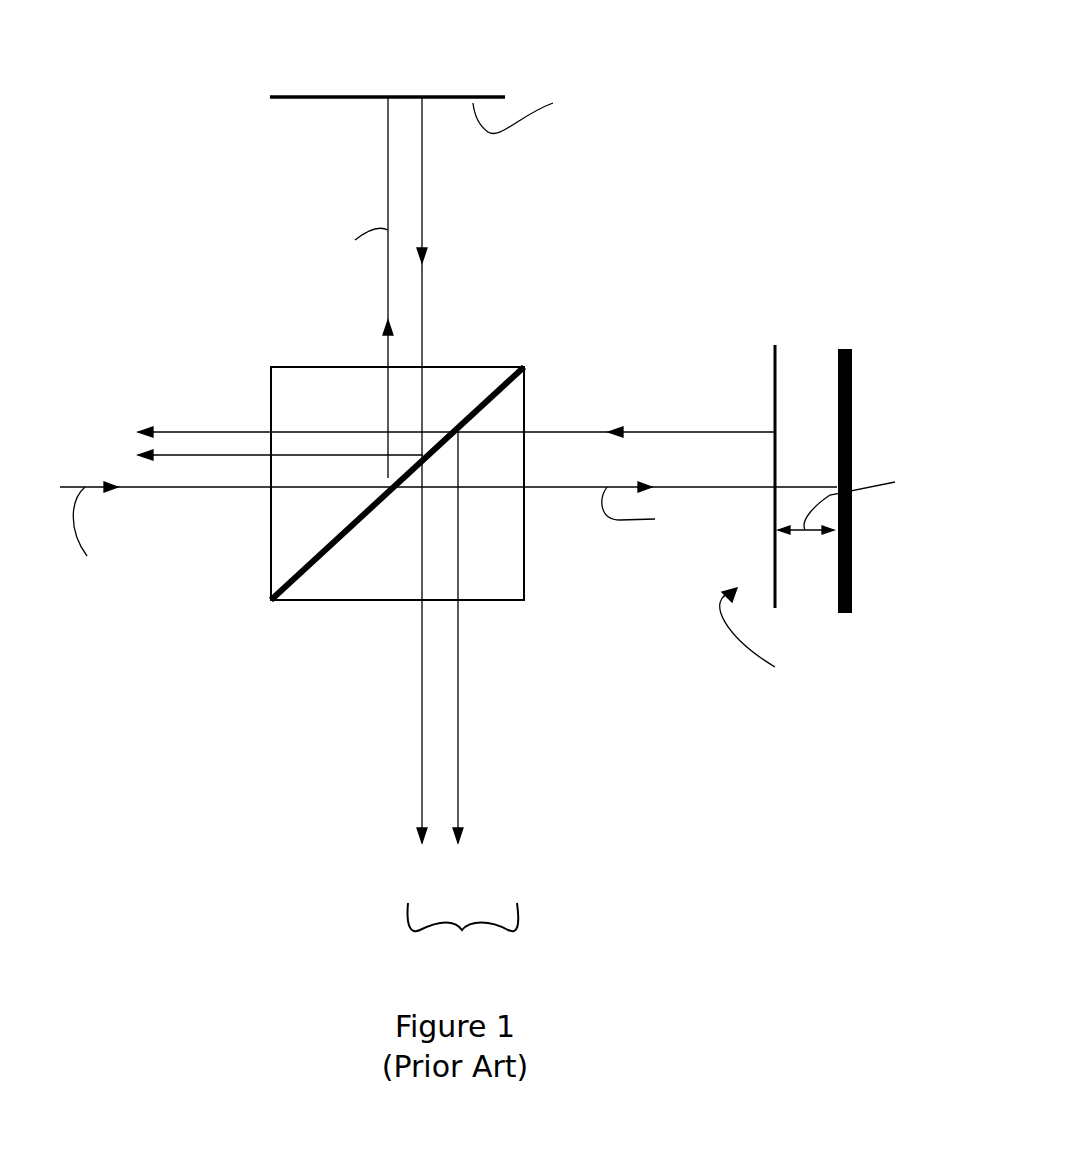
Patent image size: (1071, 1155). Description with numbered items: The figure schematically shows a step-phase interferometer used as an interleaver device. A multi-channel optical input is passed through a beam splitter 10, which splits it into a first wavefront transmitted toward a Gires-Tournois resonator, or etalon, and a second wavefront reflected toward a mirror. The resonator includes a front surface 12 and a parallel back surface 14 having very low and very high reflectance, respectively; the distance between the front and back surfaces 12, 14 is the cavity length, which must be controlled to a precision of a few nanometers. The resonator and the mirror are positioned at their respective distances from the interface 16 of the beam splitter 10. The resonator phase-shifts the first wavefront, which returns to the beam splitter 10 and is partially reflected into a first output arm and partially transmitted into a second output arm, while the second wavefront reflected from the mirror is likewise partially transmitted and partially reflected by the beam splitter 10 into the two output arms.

The beam splitter 10 is at (640, 135).
The front surface 12 is at (775, 383).
The back surface 14 is at (838, 360).
The interface 16 is at (325, 553).